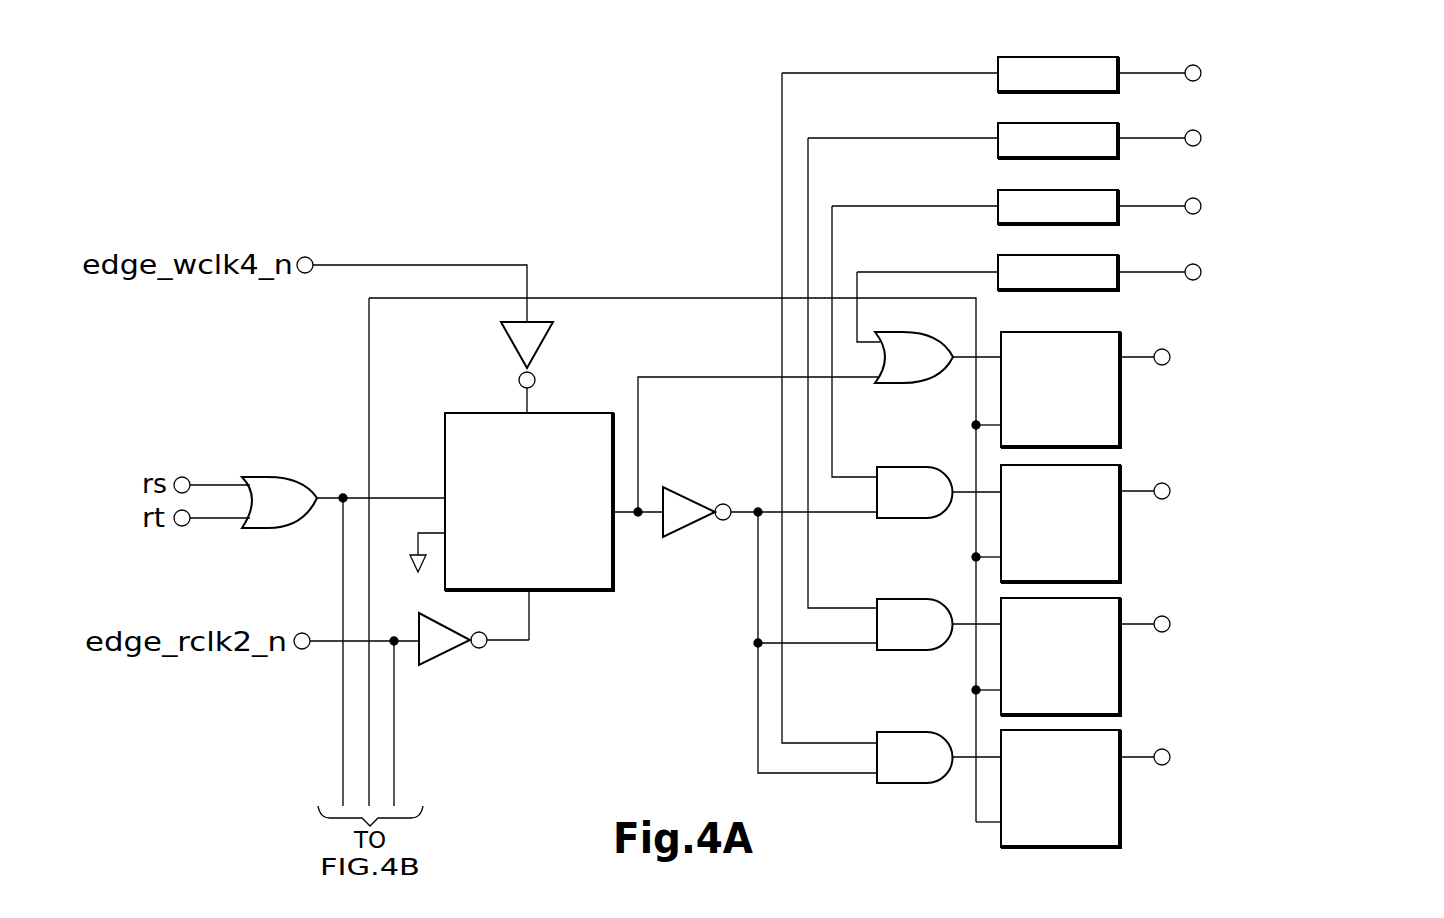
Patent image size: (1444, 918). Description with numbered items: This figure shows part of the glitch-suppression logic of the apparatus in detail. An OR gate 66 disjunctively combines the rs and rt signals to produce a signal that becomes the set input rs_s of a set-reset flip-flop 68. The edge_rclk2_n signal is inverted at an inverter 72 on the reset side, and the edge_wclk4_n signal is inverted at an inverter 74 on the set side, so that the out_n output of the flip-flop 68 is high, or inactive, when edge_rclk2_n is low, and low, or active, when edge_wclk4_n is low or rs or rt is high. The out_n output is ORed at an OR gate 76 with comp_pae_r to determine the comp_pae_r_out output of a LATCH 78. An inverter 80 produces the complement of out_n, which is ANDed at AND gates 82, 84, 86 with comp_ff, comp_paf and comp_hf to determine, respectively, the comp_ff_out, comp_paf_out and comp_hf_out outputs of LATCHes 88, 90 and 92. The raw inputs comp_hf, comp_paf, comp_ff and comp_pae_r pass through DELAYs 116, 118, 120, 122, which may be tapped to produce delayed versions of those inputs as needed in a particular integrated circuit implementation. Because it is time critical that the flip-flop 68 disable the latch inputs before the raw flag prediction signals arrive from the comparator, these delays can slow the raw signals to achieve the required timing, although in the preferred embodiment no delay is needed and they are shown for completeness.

The OR gate 66 is at (287, 477).
The set-reset (S-R) flip-flop 68 is at (478, 413).
The inverter 72 is at (437, 662).
The inverter 74 is at (545, 337).
The OR gate 76 is at (918, 385).
The LATCH 78 is at (1123, 413).
The inverter 80 is at (688, 493).
The AND gate 82 is at (920, 520).
The AND gate 84 is at (920, 652).
The AND gate 86 is at (920, 785).
The LATCH 88 is at (1123, 548).
The LATCH 90 is at (1123, 681).
The LATCH 92 is at (1123, 814).
The DELAY 116 is at (1000, 57).
The DELAY 118 is at (1000, 123).
The DELAY 120 is at (1000, 190).
The DELAY 122 is at (1000, 255).